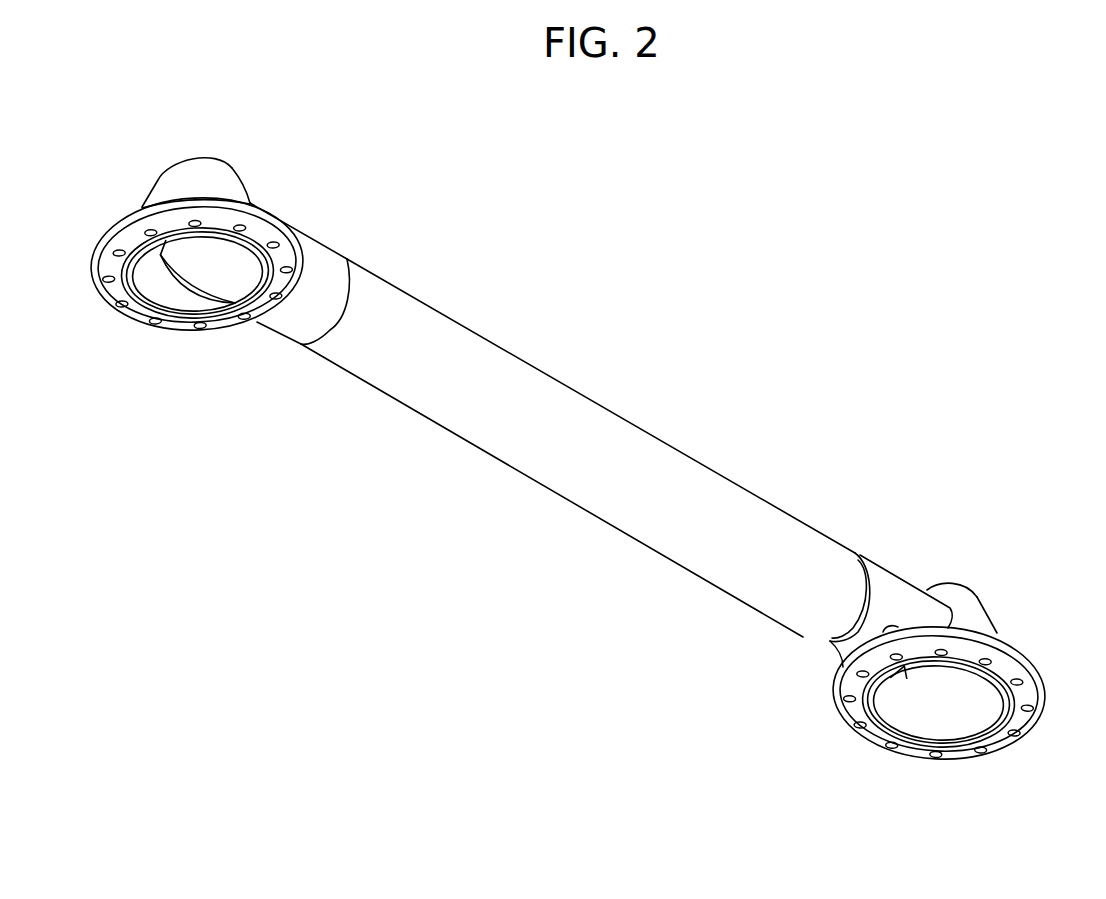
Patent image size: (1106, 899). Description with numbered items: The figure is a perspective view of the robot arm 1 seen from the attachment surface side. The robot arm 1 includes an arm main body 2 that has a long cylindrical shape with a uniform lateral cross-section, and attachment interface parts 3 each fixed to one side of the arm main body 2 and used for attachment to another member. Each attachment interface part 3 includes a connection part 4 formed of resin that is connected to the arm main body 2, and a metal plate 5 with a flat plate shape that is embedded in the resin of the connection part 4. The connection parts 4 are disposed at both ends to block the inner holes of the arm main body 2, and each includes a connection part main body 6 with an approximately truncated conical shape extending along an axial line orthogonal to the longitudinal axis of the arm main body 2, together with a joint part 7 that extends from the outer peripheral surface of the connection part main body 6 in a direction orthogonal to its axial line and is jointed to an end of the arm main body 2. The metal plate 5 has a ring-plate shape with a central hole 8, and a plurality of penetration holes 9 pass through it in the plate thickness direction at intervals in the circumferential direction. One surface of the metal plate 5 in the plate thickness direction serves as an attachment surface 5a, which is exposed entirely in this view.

The robot arm 1 is at (561, 467).
The arm main body 2 is at (640, 430).
The attachment interface part 3 is at (561, 467).
The connection part 4 is at (213, 178).
The metal plate 5 is at (178, 325).
The attachment surface 5a is at (135, 308).
The connection part main body 6 is at (197, 175).
The joint part 7 is at (308, 248).
The central hole 8 is at (203, 320).
The penetration hole 9 is at (107, 278).